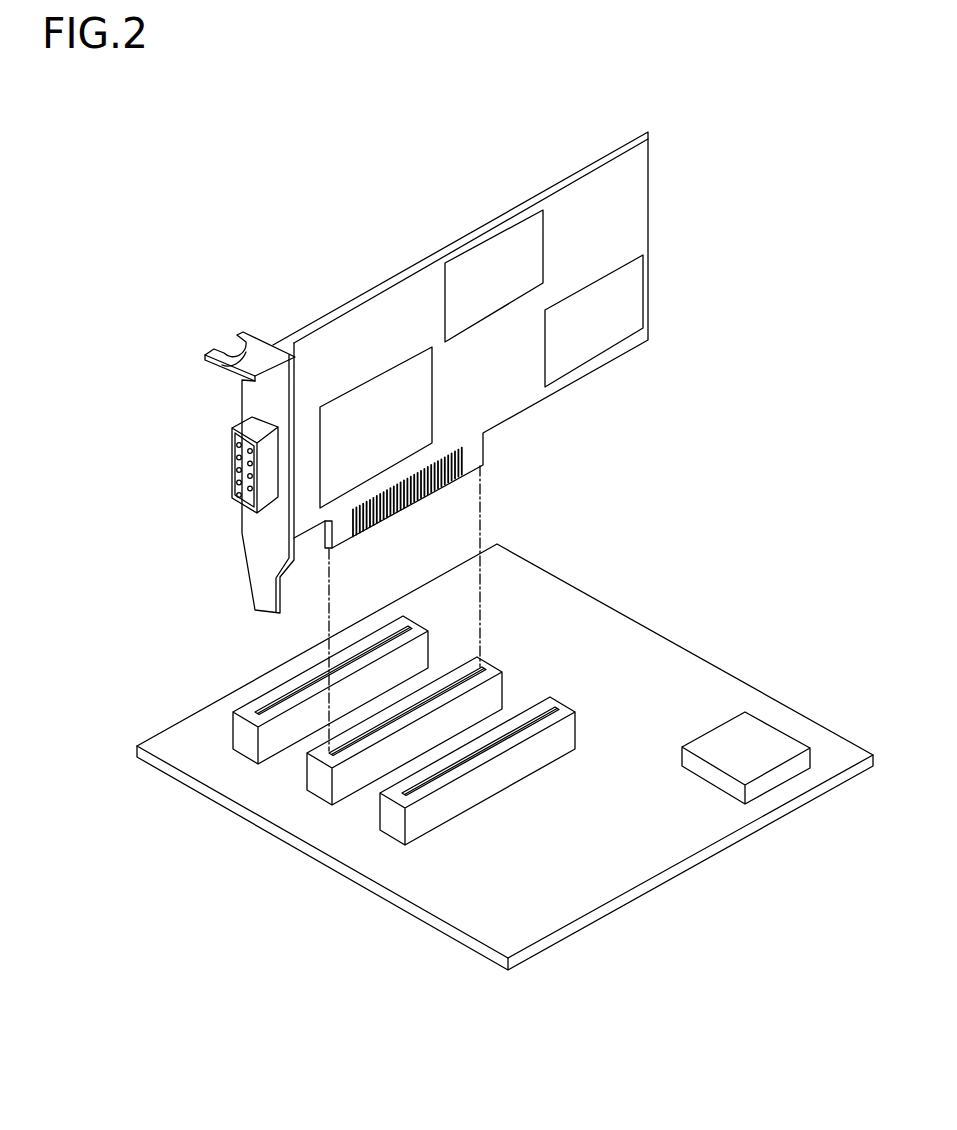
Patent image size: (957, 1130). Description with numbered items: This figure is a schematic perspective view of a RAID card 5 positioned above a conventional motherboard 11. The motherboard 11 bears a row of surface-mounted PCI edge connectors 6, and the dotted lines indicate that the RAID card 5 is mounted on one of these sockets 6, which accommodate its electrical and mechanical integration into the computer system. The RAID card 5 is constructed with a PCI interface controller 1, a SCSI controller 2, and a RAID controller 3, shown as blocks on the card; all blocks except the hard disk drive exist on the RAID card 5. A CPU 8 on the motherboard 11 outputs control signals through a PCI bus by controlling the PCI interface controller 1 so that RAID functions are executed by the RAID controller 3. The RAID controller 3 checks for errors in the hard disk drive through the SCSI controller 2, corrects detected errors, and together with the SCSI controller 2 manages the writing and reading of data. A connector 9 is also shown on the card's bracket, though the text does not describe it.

The PCI interface controller 1 is at (427, 441).
The SCSI controller 2 is at (480, 320).
The RAID controller 3 is at (597, 353).
The RAID card 5 is at (372, 292).
The PCI edge connector 6 is at (245, 747).
The CPU 8 is at (780, 732).
The external connector 9 is at (238, 471).
The motherboard 11 is at (647, 629).